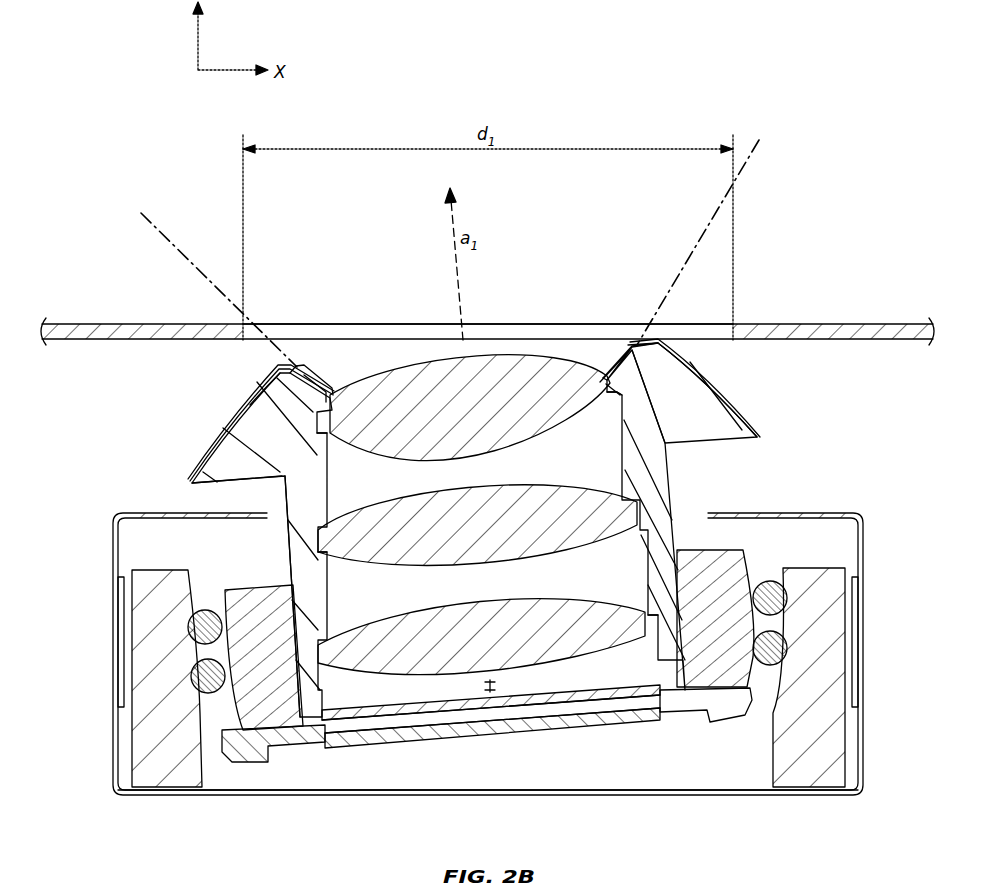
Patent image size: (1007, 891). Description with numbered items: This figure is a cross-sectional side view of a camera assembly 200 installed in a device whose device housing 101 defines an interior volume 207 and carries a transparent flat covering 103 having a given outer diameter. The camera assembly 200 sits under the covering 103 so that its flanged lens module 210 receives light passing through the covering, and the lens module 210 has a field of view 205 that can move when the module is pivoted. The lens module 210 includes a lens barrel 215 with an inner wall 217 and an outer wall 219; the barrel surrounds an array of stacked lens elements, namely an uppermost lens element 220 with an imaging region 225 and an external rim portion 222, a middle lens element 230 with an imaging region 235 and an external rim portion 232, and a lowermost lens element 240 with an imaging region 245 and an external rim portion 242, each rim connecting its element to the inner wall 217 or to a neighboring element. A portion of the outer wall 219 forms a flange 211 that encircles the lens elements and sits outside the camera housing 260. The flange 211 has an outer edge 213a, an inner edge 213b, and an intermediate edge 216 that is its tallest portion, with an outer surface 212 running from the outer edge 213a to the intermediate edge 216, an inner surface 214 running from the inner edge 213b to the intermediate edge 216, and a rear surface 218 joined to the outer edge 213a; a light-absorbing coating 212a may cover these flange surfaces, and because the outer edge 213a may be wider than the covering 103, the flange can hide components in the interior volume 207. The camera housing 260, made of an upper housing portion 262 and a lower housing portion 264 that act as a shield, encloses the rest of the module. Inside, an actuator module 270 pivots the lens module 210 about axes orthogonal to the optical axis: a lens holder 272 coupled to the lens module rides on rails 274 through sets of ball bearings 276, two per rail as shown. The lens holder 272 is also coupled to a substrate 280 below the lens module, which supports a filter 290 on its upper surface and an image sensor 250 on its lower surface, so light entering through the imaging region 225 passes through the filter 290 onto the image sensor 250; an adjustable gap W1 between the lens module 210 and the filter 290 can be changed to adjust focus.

The device housing 101 is at (832, 324).
The transparent flat covering 103 is at (692, 324).
The camera assembly 200 is at (106, 95).
The field of view 205 is at (193, 260).
The interior volume 207 is at (832, 474).
The flanged lens module 210 is at (174, 492).
The flange 211 is at (178, 404).
The outer surface 212 is at (210, 440).
The light-absorbing coating 212a is at (250, 404).
The outer edge 213a is at (760, 440).
The inner edge 213b is at (600, 376).
The inner surface 214 is at (318, 385).
The lens barrel 215 is at (245, 432).
The intermediate edge 216 is at (298, 368).
The inner wall 217 is at (318, 495).
The rear surface 218 is at (690, 446).
The outer wall 219 is at (272, 485).
The uppermost lens element 220 is at (622, 440).
The external rim portion 222 is at (325, 436).
The imaging region 225 is at (370, 365).
The middle lens element 230 is at (565, 548).
The external rim portion 232 is at (327, 556).
The imaging region 235 is at (540, 496).
The lowermost lens element 240 is at (598, 708).
The external rim portion 242 is at (648, 612).
The imaging region 245 is at (378, 630).
The image sensor 250 is at (378, 775).
The camera housing 260 is at (84, 772).
The upper housing portion 262 is at (866, 552).
The lower housing portion 264 is at (866, 772).
The actuator module 270 is at (760, 716).
The lens holder 272 is at (264, 588).
The rails 274 is at (130, 735).
The ball bearings 276 is at (208, 610).
The substrate 280 is at (250, 776).
The filter 290 is at (544, 718).
The adjustable gap W1 is at (478, 682).